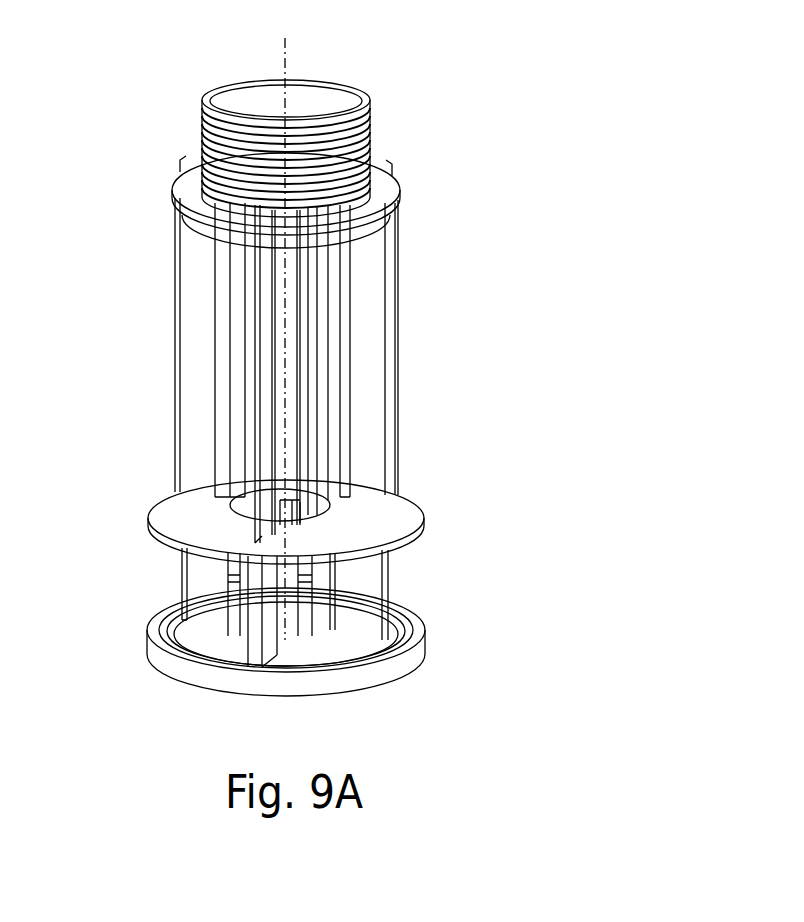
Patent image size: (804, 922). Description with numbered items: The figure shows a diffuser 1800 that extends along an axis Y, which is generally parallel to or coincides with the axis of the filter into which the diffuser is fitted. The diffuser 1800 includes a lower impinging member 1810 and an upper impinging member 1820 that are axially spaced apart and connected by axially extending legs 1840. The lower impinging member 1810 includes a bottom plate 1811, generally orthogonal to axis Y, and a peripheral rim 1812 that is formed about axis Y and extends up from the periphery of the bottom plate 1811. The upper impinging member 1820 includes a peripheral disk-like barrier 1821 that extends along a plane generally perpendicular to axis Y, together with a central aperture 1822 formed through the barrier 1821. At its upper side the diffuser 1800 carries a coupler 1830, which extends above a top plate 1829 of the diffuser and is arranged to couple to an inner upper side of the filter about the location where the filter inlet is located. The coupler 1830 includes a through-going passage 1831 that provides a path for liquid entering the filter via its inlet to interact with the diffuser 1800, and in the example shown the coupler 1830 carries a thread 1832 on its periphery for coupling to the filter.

The diffuser 1800 is at (568, 247).
The coupler 1830 is at (197, 93).
The through-going passage 1831 is at (331, 116).
The thread 1832 is at (187, 136).
The top plate 1829 is at (188, 182).
The legs 1840 is at (214, 365).
The upper impinging member 1820 is at (435, 513).
The peripheral disk-like barrier 1821 is at (190, 517).
The central aperture 1822 is at (318, 514).
The peripheral rim 1812 is at (150, 624).
The lower impinging member 1810 is at (437, 657).
The bottom plate 1811 is at (325, 655).